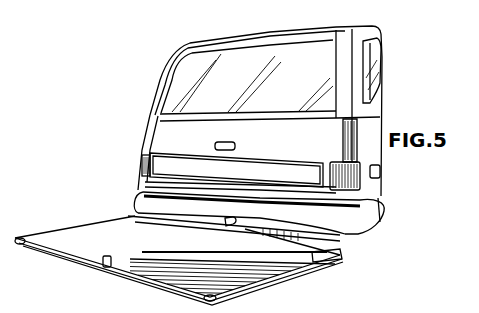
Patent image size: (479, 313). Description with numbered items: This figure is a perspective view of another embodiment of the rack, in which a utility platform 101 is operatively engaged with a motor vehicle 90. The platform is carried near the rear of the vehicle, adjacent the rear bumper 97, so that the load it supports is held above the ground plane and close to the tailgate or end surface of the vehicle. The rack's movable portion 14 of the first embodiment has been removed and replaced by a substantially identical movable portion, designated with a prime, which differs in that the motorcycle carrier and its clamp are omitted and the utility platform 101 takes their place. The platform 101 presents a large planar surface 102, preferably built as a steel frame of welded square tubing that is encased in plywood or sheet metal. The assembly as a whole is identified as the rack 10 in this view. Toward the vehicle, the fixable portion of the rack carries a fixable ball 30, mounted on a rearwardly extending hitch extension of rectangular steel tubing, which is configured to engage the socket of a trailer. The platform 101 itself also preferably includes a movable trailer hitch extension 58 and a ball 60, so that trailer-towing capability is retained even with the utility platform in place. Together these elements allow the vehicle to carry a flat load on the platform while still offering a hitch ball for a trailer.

The motor vehicle 90 is at (308, 24).
The rear bumper 97 is at (353, 232).
The carrier assembly 10 is at (116, 192).
The movable portion 14 is at (55, 214).
The large planar surface 102 is at (82, 232).
The ball 60 is at (107, 256).
The movable trailer hitch extension 58 is at (107, 268).
The fixable ball 30 is at (220, 224).
The utility platform 101 is at (309, 255).